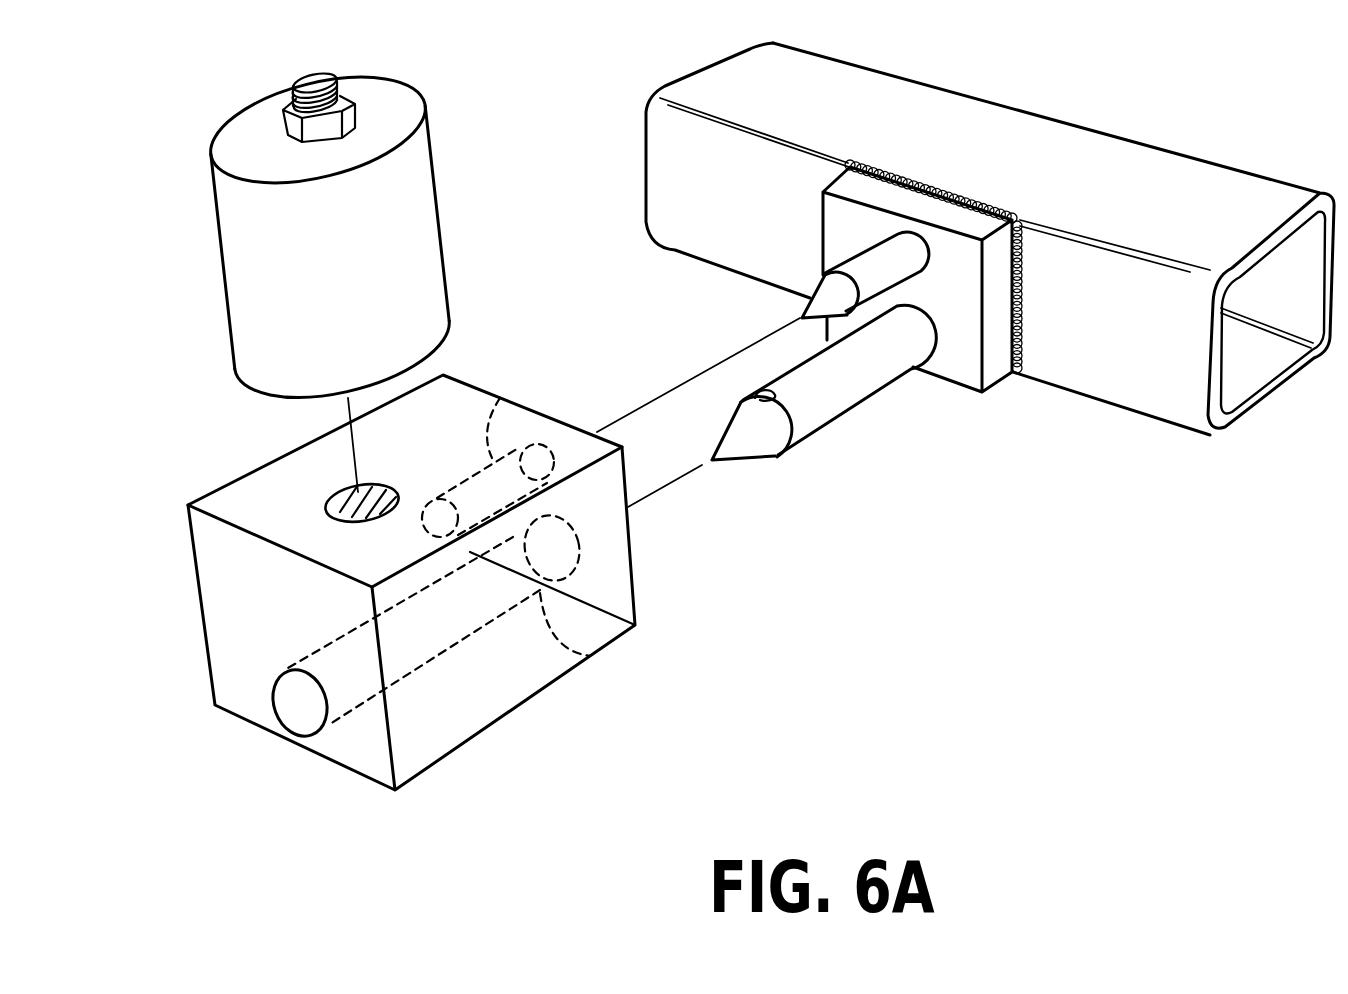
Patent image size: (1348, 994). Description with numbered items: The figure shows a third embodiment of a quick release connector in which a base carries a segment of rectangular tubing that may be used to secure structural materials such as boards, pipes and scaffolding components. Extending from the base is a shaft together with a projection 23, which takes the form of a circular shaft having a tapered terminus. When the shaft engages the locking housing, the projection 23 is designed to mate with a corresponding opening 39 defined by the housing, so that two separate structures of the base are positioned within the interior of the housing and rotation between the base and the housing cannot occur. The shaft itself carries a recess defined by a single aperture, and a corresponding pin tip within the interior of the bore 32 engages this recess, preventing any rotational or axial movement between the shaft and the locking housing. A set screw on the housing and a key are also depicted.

The projection 23 is at (863, 267).
The opening 39 is at (503, 397).
The bore 32 is at (583, 652).